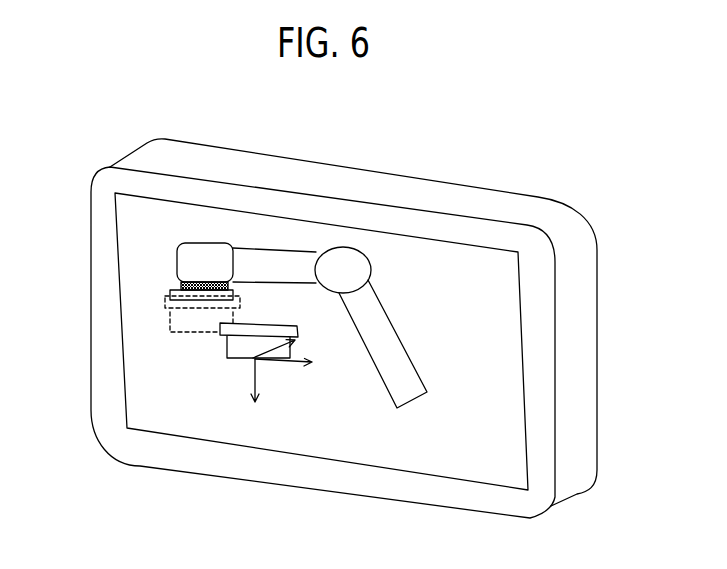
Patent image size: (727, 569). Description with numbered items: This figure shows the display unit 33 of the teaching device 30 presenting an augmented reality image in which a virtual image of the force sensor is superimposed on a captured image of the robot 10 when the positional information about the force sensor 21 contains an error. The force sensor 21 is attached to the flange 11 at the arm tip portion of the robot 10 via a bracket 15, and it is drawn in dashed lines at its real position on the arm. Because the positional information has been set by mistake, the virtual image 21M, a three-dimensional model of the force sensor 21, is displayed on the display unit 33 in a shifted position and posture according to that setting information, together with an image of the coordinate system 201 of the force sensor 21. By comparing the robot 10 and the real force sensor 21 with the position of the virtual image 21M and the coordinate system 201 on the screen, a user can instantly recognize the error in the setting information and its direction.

The robot 10 is at (273, 247).
The flange 11 is at (180, 283).
The bracket 15 is at (170, 291).
The force sensor 21 is at (171, 317).
The virtual image 21M is at (238, 359).
The coordinate system 201 is at (265, 380).
The teaching device 30 is at (473, 187).
The display unit 33 is at (481, 447).